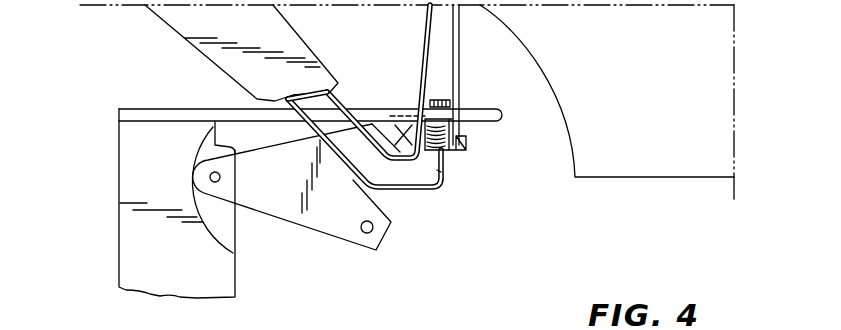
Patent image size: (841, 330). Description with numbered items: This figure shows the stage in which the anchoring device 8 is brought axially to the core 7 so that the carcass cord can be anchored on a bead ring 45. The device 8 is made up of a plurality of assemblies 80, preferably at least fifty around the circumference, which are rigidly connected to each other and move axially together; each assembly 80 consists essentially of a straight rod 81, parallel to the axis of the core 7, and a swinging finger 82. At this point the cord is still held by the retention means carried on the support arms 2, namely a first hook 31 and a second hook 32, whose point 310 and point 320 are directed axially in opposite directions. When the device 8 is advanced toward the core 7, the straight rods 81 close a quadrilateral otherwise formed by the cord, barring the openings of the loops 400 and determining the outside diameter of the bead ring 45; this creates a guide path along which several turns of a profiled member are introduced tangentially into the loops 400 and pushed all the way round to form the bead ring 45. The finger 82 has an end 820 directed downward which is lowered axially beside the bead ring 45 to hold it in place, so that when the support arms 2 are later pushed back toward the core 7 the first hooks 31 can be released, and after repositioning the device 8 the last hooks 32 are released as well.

The support arm 2 is at (212, 45).
The core 7 is at (720, 90).
The anchoring device 8 is at (98, 167).
The assembly 80 is at (120, 203).
The straight rod 81 is at (492, 108).
The swinging finger 82 is at (293, 205).
The first hook 31 is at (383, 188).
The end point of first hook 310 is at (407, 124).
The second hook 32 is at (437, 172).
The loop 400 is at (463, 110).
The bead ring 45 is at (438, 145).
The end of finger 820 is at (466, 141).
The point of second hook 320 is at (461, 150).